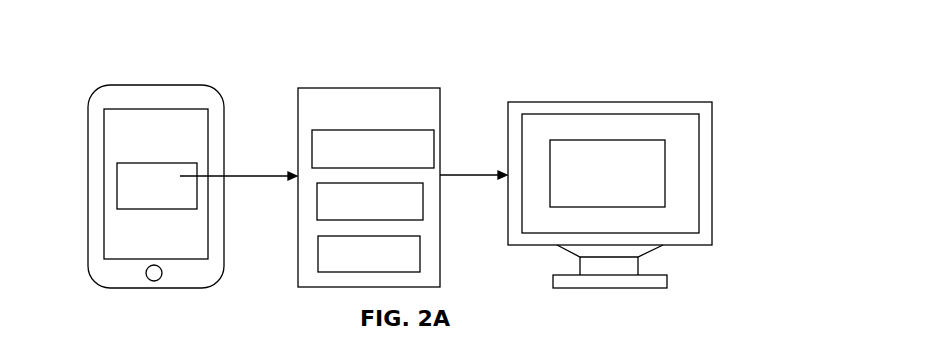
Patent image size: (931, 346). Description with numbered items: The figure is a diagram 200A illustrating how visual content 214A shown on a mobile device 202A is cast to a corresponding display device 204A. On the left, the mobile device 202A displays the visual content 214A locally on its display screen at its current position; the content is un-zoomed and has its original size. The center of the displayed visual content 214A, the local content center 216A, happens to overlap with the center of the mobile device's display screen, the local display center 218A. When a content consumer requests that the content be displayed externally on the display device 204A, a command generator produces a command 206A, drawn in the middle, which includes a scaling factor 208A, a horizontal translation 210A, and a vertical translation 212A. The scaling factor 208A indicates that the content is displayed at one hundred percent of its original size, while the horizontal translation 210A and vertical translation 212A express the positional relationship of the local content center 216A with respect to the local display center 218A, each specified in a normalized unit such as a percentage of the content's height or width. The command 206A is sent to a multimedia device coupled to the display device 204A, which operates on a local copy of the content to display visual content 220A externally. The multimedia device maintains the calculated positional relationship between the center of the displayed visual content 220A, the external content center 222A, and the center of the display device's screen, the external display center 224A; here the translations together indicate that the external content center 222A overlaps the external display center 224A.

The diagram 200A is at (766, 30).
The mobile device 202A is at (183, 85).
The display device 204A is at (686, 102).
The command 206A is at (405, 88).
The scaling factor 208A is at (434, 147).
The horizontal translation 210A is at (423, 200).
The vertical translation 212A is at (420, 250).
The visual content 214A is at (125, 163).
The local content center 216A is at (125, 185).
The local display center 218A is at (223, 176).
The visual content 220A is at (556, 140).
The external content center 222A is at (597, 152).
The external display center 224A is at (648, 167).